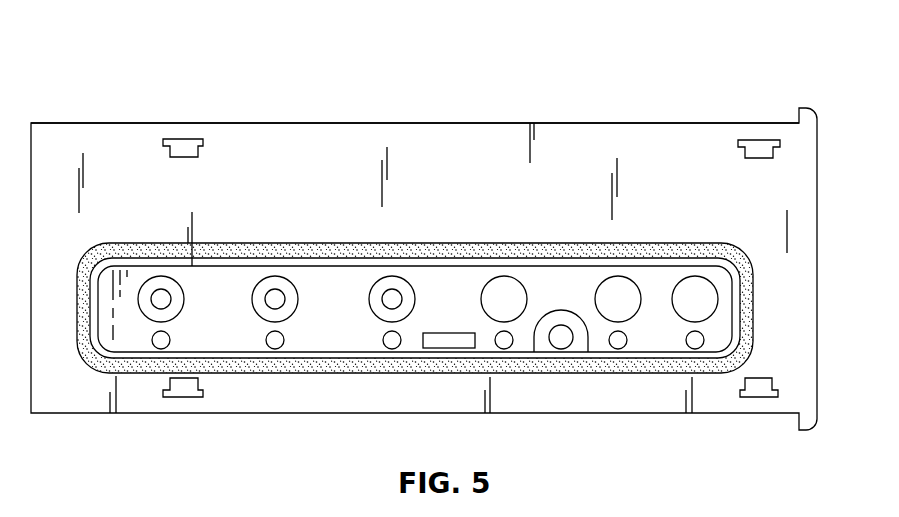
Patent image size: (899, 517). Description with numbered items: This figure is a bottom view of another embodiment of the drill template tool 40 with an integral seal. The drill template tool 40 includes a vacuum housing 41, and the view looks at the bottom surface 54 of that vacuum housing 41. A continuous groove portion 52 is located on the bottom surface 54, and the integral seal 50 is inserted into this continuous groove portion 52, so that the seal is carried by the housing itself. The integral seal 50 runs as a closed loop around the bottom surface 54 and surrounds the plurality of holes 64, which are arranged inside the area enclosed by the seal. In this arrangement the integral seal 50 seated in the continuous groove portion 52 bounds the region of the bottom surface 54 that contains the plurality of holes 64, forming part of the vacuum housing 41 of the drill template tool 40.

The drill template tool 40 is at (200, 85).
The vacuum housing 41 is at (284, 122).
The integral seal 50 is at (468, 246).
The continuous groove portion 52 is at (753, 293).
The bottom surface 54 is at (655, 174).
The plurality of holes 64 is at (377, 306).